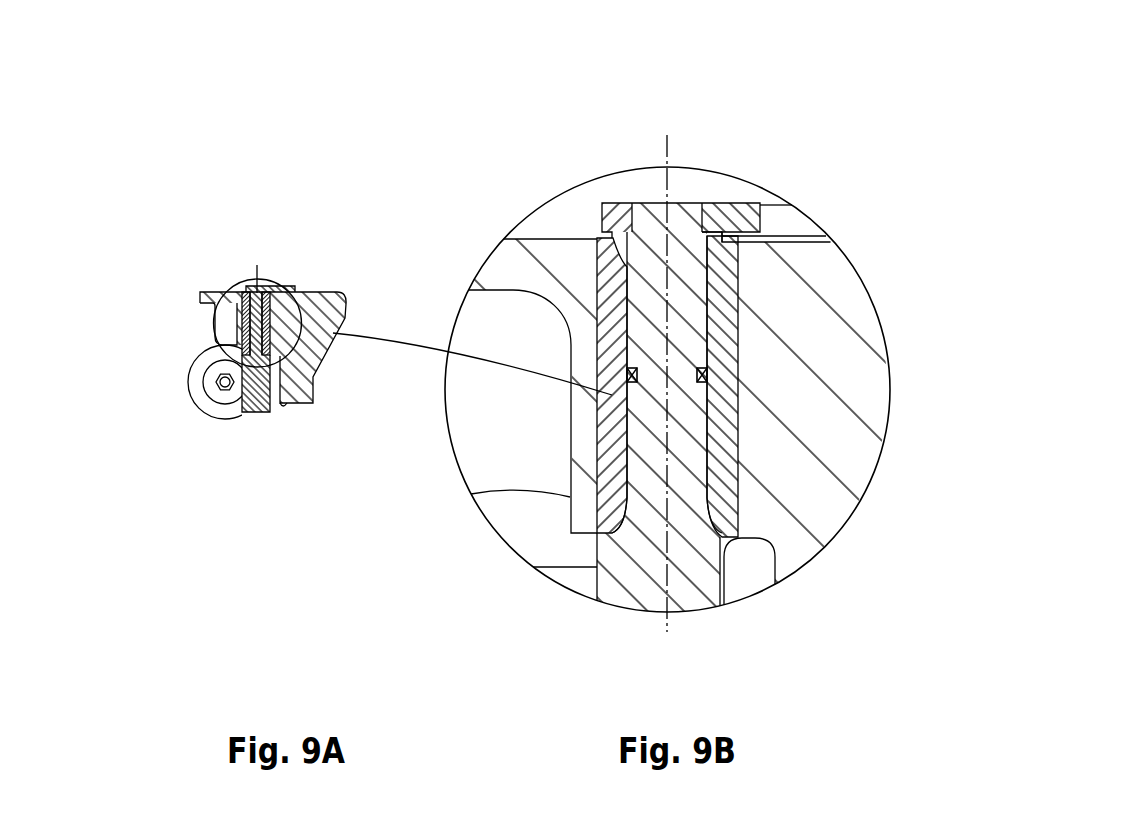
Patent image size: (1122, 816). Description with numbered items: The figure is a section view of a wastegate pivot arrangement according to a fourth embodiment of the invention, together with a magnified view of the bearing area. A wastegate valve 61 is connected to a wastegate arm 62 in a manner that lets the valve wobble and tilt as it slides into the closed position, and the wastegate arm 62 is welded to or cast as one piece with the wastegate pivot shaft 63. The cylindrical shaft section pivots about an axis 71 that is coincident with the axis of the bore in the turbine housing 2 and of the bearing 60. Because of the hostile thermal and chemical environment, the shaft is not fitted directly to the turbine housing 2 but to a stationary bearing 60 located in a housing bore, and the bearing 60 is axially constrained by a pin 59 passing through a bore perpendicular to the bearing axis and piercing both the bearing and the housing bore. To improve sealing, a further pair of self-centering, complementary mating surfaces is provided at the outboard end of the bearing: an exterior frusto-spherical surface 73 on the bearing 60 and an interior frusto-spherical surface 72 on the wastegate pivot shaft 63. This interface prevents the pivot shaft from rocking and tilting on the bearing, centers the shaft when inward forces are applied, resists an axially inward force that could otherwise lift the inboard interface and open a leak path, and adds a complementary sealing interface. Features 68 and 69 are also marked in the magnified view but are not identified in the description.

In FIG. 9A, the turbine housing 2 is at (310, 290).
In FIG. 9B, the turbine housing 2 is at (498, 272).
In FIG. 9B, the pin 59 is at (742, 275).
In FIG. 9A, the bearing 60 is at (447, 350).
In FIG. 9A, the wastegate valve 61 is at (221, 411).
In FIG. 9A, the wastegate arm 62 is at (296, 291).
In FIG. 9B, the wastegate arm 62 is at (704, 246).
In FIG. 9A, the wastegate pivot shaft 63 is at (253, 403).
In FIG. 9B, the wastegate pivot shaft 63 is at (652, 367).
In FIG. 9B, the chamfer 68 is at (707, 518).
In FIG. 9B, the groove 69 is at (723, 505).
In FIG. 9B, the axis 71 is at (674, 146).
In FIG. 9B, the interior frusto-spherical surface 72 is at (658, 217).
In FIG. 9B, the exterior frusto-spherical surface 73 is at (722, 257).